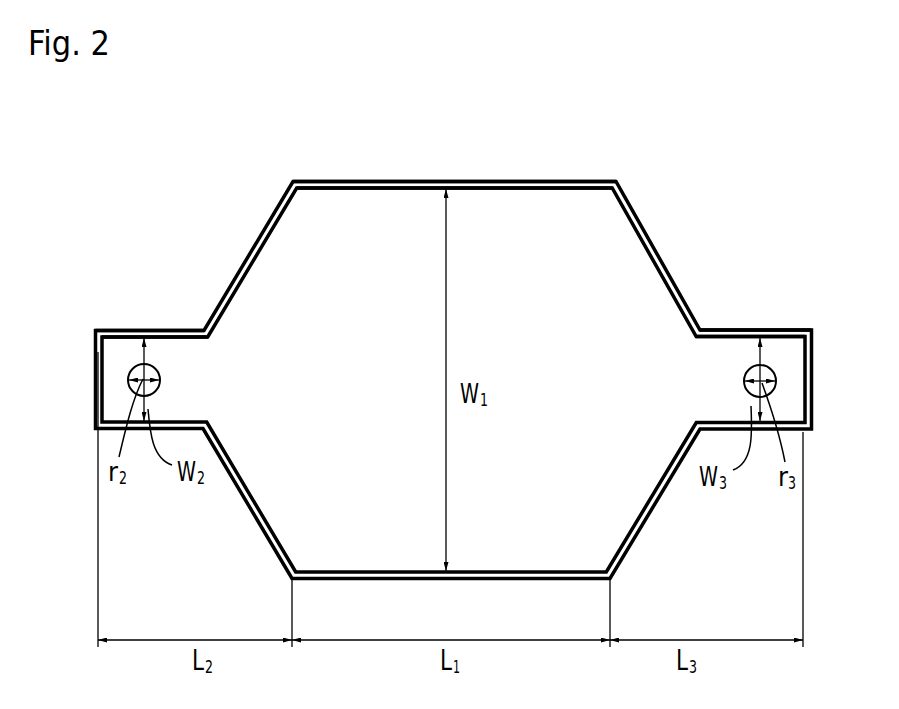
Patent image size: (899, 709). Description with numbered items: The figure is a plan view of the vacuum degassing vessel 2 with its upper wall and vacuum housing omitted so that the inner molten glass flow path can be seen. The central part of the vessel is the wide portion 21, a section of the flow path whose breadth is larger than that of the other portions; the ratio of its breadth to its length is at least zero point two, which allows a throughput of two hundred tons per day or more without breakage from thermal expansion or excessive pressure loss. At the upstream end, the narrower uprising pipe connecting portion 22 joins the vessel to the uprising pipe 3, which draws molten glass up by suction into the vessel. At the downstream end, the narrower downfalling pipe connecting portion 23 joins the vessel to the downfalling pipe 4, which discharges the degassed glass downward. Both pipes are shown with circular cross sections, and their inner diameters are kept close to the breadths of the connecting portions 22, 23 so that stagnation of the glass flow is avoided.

The vacuum degassing vessel 2 is at (674, 200).
The wide portion 21 is at (494, 187).
The uprising pipe connecting portion 22 is at (160, 335).
The downfalling pipe connecting portion 23 is at (737, 335).
The uprising pipe 3 is at (134, 372).
The downfalling pipe 4 is at (774, 371).